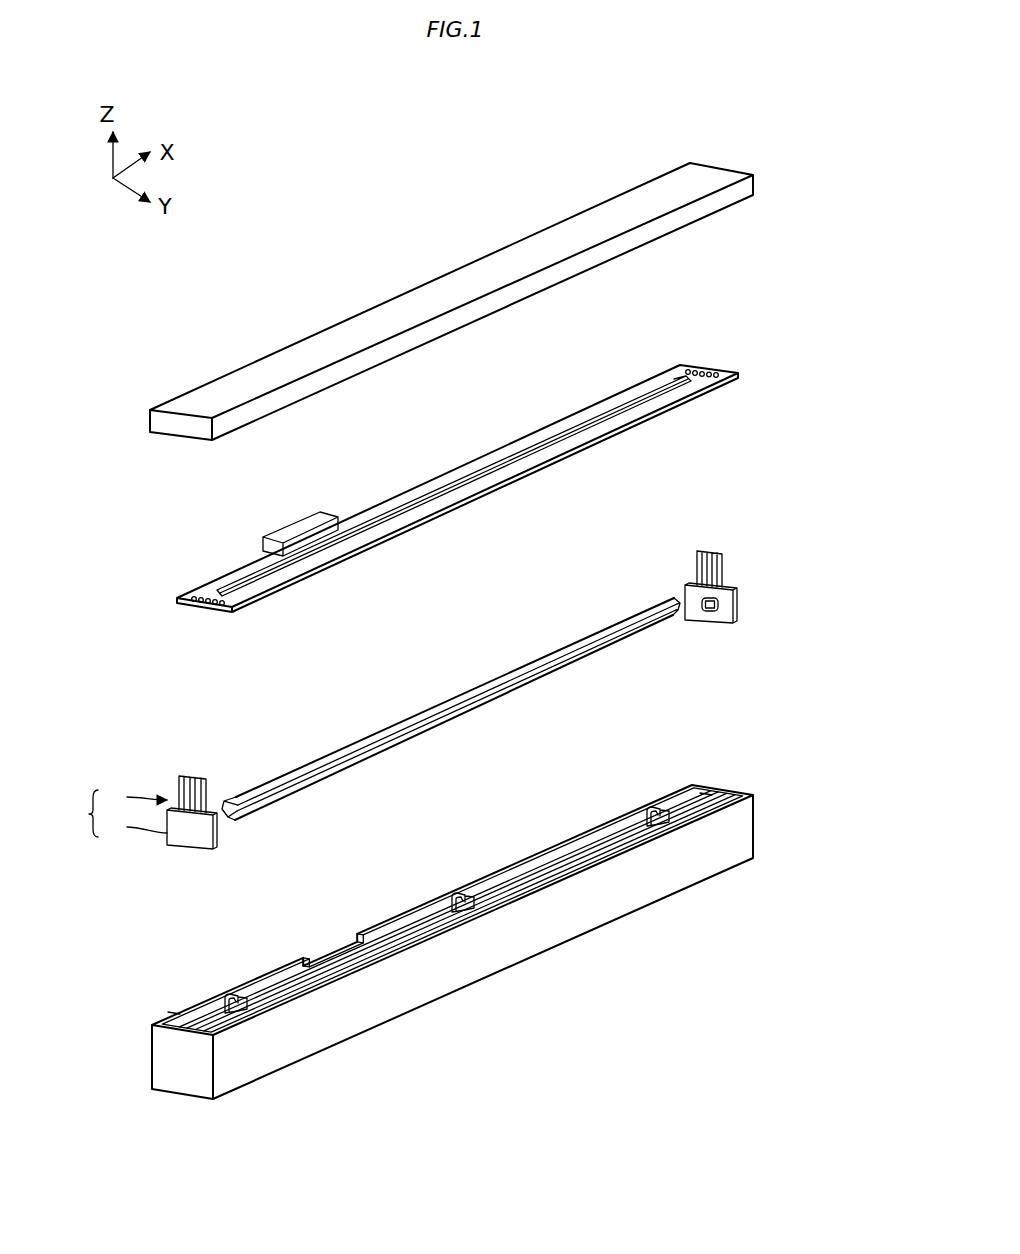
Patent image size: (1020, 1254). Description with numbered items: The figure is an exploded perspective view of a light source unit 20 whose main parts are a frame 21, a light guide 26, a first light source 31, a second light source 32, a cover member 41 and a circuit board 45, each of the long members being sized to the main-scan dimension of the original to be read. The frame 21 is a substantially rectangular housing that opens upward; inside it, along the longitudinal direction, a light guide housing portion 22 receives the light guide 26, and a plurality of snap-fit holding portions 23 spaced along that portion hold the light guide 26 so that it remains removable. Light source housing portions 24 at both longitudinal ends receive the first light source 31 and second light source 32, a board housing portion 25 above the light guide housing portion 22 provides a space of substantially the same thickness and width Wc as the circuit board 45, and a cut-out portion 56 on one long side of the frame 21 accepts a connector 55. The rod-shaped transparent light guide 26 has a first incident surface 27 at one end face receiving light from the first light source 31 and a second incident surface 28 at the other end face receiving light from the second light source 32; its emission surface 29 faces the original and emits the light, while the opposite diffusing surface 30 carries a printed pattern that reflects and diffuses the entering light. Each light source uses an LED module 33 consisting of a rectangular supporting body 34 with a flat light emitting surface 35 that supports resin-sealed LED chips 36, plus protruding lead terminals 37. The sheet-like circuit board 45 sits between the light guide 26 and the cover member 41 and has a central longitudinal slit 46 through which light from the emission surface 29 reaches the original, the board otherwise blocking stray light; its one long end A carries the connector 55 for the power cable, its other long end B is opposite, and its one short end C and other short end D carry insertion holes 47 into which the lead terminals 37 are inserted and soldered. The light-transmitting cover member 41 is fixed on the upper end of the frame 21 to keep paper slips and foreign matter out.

The light source unit 20 is at (258, 290).
The frame 21 is at (668, 903).
The light guide housing portion 22 is at (438, 915).
The snap-fit holding portions 23 is at (652, 818).
The light source housing portions 24 is at (713, 798).
The board housing portion 25 is at (560, 858).
The light guide 26 is at (548, 657).
The first incident surface 27 is at (673, 600).
The second incident surface 28 is at (230, 807).
The emission surface 29 is at (442, 704).
The diffusing surface 30 is at (435, 729).
The first light source 31 is at (768, 542).
The second light source 32 is at (132, 768).
The LED module 33 is at (808, 562).
The supporting body 34 is at (737, 607).
The light emitting surface 35 is at (723, 618).
The LED chips 36 is at (703, 602).
The lead terminals 37 is at (728, 578).
The cover member 41 is at (192, 393).
The circuit board 45 is at (390, 488).
The slit 46 is at (463, 476).
The insertion holes 47 is at (700, 362).
The connector 55 is at (282, 527).
The cut-out portion 56 is at (330, 956).
The one long end A is at (510, 448).
The other long end B is at (527, 473).
The one short end C is at (722, 364).
The other short end D is at (205, 612).
The width of circuit board Wc is at (562, 405).